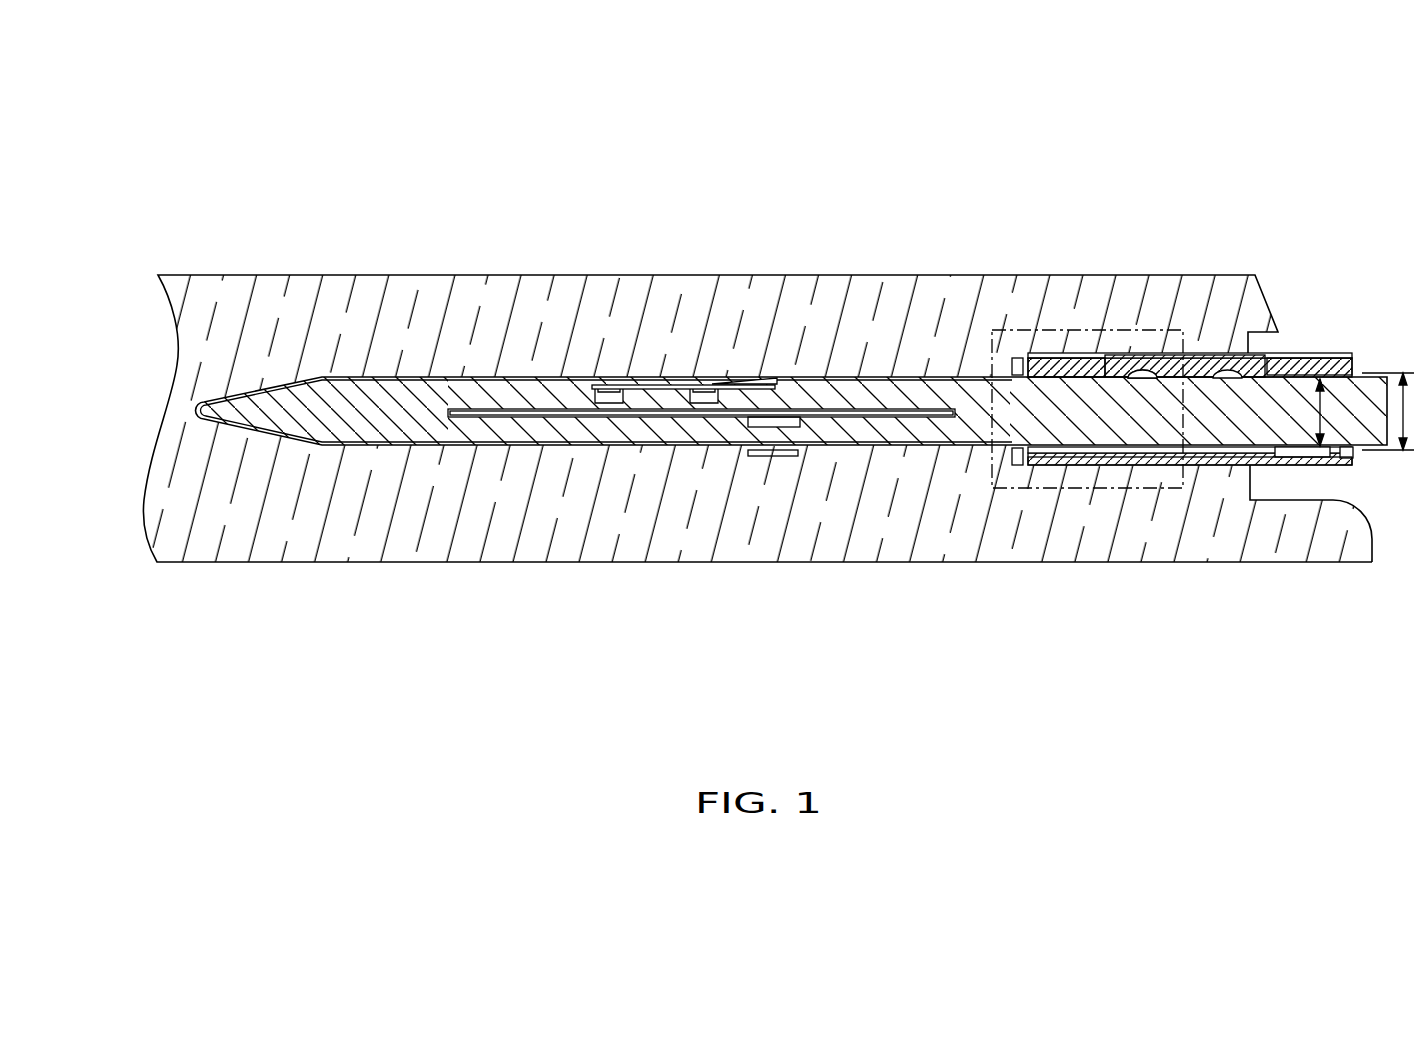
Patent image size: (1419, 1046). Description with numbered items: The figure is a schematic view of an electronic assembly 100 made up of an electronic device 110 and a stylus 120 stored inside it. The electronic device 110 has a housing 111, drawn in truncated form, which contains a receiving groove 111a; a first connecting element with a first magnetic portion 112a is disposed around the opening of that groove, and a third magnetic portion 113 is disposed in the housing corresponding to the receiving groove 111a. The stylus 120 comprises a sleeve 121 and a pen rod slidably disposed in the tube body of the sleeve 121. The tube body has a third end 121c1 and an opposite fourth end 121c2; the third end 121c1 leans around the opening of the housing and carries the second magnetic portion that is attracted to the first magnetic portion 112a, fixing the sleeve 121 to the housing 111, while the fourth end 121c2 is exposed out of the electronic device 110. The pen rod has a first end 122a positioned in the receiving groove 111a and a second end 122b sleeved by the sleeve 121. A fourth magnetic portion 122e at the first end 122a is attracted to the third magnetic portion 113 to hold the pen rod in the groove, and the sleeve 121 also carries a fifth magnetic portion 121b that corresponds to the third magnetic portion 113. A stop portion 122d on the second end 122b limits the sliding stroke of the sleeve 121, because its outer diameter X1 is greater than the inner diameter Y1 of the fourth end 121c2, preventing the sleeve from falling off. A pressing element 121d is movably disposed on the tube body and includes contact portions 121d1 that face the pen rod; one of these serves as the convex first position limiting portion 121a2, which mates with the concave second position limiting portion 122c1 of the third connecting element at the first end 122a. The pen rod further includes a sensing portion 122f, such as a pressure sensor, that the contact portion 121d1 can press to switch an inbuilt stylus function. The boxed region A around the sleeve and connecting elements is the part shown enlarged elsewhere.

The electronic assembly 100 is at (1400, 704).
The electronic device 110 is at (179, 228).
The housing 111 is at (268, 283).
The receiving groove 111a is at (648, 381).
The first magnetic portion 112a is at (1018, 357).
The third magnetic portion 113 is at (723, 447).
The stylus 120 is at (1379, 478).
The sleeve 121 is at (1321, 314).
The fifth magnetic portion 121b is at (1307, 457).
The third end 121c1 is at (1050, 368).
The fourth end 121c2 is at (1300, 358).
The pressing element 121d is at (1157, 366).
The contact portion 121d1 is at (1223, 377).
The first position limiting portion 121a2 is at (1140, 376).
The first end 122a is at (612, 425).
The second end 122b is at (1205, 415).
The second position limiting portion 122c1 is at (602, 385).
The stop portion 122d is at (1343, 460).
The fourth magnetic portion 122e is at (790, 422).
The sensing portion 122f is at (612, 400).
The region A is at (1170, 330).
The inner diameter Y1 is at (1334, 369).
The outer diameter X1 is at (1388, 371).